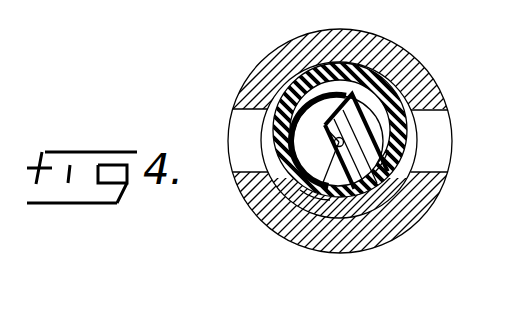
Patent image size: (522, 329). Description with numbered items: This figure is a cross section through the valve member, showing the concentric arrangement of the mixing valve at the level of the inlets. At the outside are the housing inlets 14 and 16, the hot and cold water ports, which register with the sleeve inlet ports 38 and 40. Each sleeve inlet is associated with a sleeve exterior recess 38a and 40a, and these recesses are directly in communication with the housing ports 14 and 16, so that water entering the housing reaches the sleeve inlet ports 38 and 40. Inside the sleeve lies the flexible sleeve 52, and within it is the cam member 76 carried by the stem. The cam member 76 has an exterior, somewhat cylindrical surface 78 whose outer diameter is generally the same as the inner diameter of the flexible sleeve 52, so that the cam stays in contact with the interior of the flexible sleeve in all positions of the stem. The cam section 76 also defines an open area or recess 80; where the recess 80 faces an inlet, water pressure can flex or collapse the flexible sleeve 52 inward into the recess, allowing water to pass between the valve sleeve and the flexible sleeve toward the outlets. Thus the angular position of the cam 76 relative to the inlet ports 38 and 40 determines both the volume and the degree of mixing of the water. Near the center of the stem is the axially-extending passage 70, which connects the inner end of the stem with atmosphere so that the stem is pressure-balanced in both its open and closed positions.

The housing inlet 14 is at (236, 158).
The housing inlet 16 is at (445, 148).
The sleeve inlet port 38 is at (283, 125).
The sleeve exterior recess 38a is at (282, 97).
The sleeve inlet port 40 is at (400, 127).
The sleeve exterior recess 40a is at (403, 100).
The flexible sleeve 52 is at (358, 82).
The axially-extending passage 70 is at (306, 212).
The cam member 76 is at (377, 83).
The exterior cylindrical surface 78 is at (400, 147).
The open area or recess 80 is at (335, 107).